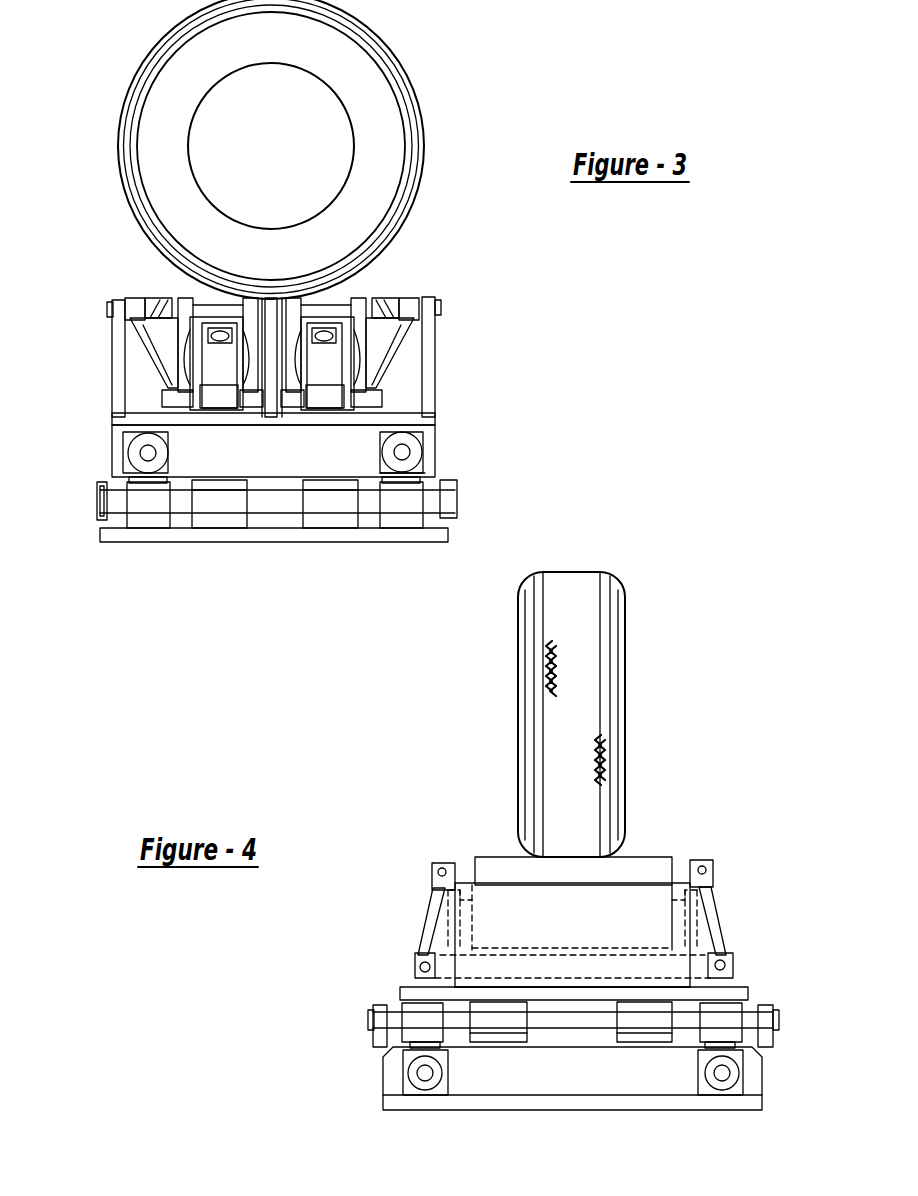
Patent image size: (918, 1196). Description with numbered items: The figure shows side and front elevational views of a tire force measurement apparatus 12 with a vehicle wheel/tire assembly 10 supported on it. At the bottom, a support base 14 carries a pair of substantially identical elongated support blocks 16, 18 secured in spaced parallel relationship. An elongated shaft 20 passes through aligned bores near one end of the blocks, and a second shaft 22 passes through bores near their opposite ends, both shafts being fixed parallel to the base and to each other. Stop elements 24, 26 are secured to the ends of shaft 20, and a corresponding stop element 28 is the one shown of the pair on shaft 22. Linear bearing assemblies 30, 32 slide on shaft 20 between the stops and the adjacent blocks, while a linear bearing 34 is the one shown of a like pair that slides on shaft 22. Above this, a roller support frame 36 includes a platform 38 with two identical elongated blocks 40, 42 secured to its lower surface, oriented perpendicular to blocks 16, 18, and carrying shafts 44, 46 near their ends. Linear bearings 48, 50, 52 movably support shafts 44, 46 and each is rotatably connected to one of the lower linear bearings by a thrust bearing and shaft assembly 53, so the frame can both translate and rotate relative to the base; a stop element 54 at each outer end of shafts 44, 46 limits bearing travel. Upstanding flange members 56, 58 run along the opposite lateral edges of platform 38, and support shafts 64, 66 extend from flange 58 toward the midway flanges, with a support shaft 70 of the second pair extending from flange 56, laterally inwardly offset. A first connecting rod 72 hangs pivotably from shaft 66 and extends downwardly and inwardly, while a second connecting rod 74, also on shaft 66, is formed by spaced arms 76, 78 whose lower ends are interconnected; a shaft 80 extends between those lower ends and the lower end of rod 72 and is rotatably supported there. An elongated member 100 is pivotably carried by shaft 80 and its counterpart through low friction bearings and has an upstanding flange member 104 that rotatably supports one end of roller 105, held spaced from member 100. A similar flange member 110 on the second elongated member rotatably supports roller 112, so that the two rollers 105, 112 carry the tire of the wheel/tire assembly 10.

In FIG. 3, the vehicle wheel/tire assembly 10 is at (358, 28).
In FIG. 4, the vehicle wheel/tire assembly 10 is at (600, 575).
In FIG. 3, the tire force measurement apparatus 12 is at (530, 375).
In FIG. 4, the tire force measurement apparatus 12 is at (245, 1007).
In FIG. 3, the support base 14 is at (282, 543).
In FIG. 4, the support base 14 is at (622, 1098).
In FIG. 3, the support block 16 is at (225, 520).
In FIG. 4, the support block 16 is at (540, 1090).
In FIG. 3, the support block 18 is at (330, 518).
In FIG. 3, the elongated shaft 20 is at (430, 485).
In FIG. 4, the elongated shaft 20 is at (735, 1075).
In FIG. 4, the second shaft 22 is at (418, 1082).
In FIG. 3, the stop element 24 is at (447, 515).
In FIG. 3, the stop element 26 is at (105, 520).
In FIG. 4, the stop element 26 is at (717, 1096).
In FIG. 4, the stop element 28 is at (398, 1098).
In FIG. 3, the linear bearing assembly 30 is at (397, 517).
In FIG. 3, the linear bearing assembly 32 is at (140, 517).
In FIG. 4, the linear bearing assembly 32 is at (735, 1096).
In FIG. 3, the linear bearing 34 is at (432, 410).
In FIG. 4, the linear bearing 34 is at (440, 1097).
In FIG. 3, the roller support frame 36 is at (110, 422).
In FIG. 4, the roller support frame 36 is at (745, 990).
In FIG. 4, the platform 38 is at (413, 992).
In FIG. 4, the elongated block 40 is at (490, 1029).
In FIG. 3, the elongated block 42 is at (264, 454).
In FIG. 4, the elongated block 42 is at (636, 1029).
In FIG. 3, the shaft 44 is at (405, 452).
In FIG. 3, the shaft 46 is at (135, 460).
In FIG. 4, the shaft 46 is at (760, 1015).
In FIG. 3, the linear bearing 48 is at (102, 482).
In FIG. 4, the linear bearing 48 is at (713, 1033).
In FIG. 4, the linear bearing 50 is at (414, 1033).
In FIG. 3, the linear bearing 52 is at (420, 472).
In FIG. 3, the thrust bearing and shaft assembly 53 is at (158, 474).
In FIG. 4, the thrust bearing and shaft assembly 53 is at (425, 1073).
In FIG. 3, the stop element 54 is at (140, 450).
In FIG. 4, the stop element 54 is at (380, 1025).
In FIG. 3, the upstanding flange member 56 is at (428, 360).
In FIG. 3, the upstanding flange member 58 is at (120, 352).
In FIG. 4, the upstanding flange member 58 is at (720, 905).
In FIG. 4, the support shaft 64 is at (700, 870).
In FIG. 3, the support shaft 66 is at (172, 312).
In FIG. 4, the support shaft 66 is at (440, 868).
In FIG. 3, the support shaft 70 is at (385, 298).
In FIG. 3, the first connecting rod 72 is at (243, 300).
In FIG. 3, the second connecting rod 74 is at (150, 368).
In FIG. 3, the arm 76 is at (300, 300).
In FIG. 3, the arm 78 is at (132, 320).
In FIG. 3, the shaft 80 is at (192, 412).
In FIG. 3, the elongated member 100 is at (228, 400).
In FIG. 4, the elongated member 100 is at (570, 968).
In FIG. 3, the flange member 104 is at (210, 374).
In FIG. 3, the roller 105 is at (160, 302).
In FIG. 4, the roller 105 is at (640, 875).
In FIG. 3, the flange member 110 is at (320, 374).
In FIG. 3, the roller 112 is at (375, 300).